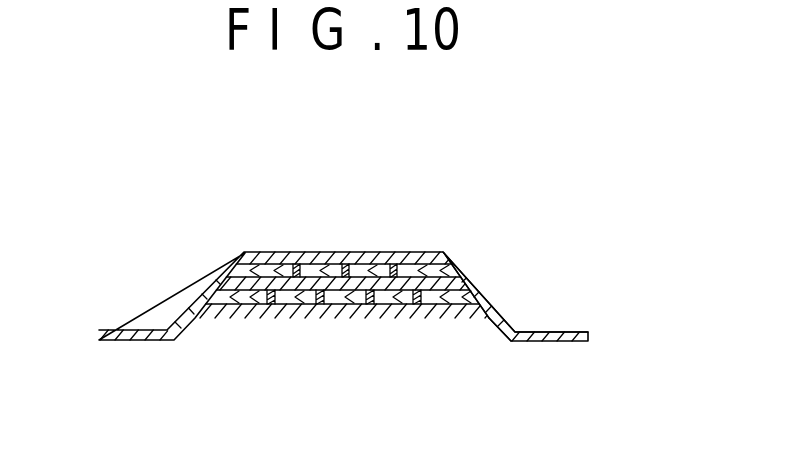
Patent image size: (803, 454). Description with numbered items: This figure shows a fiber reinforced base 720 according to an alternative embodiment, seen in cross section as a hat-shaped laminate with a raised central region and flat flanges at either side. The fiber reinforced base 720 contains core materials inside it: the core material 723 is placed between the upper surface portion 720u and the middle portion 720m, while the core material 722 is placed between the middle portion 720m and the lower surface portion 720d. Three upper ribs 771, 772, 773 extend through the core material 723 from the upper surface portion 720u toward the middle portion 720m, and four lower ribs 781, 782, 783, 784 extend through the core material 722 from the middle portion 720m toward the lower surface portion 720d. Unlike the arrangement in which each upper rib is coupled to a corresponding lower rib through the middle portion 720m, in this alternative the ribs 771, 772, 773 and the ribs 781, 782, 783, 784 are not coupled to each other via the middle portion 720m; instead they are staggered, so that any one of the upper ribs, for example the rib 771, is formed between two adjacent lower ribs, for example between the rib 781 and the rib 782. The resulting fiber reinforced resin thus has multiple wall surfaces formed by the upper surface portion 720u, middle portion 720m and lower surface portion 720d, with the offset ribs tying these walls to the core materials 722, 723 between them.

The fiber reinforced base 720 is at (553, 320).
The upper surface portion 720u is at (363, 260).
The middle portion 720m is at (440, 285).
The lower surface portion 720d is at (393, 318).
The core material 722 is at (478, 306).
The core material 723 is at (447, 270).
The rib 771 is at (297, 264).
The rib 772 is at (345, 265).
The rib 773 is at (394, 265).
The rib 781 is at (272, 304).
The rib 782 is at (320, 304).
The rib 783 is at (370, 304).
The rib 784 is at (415, 304).